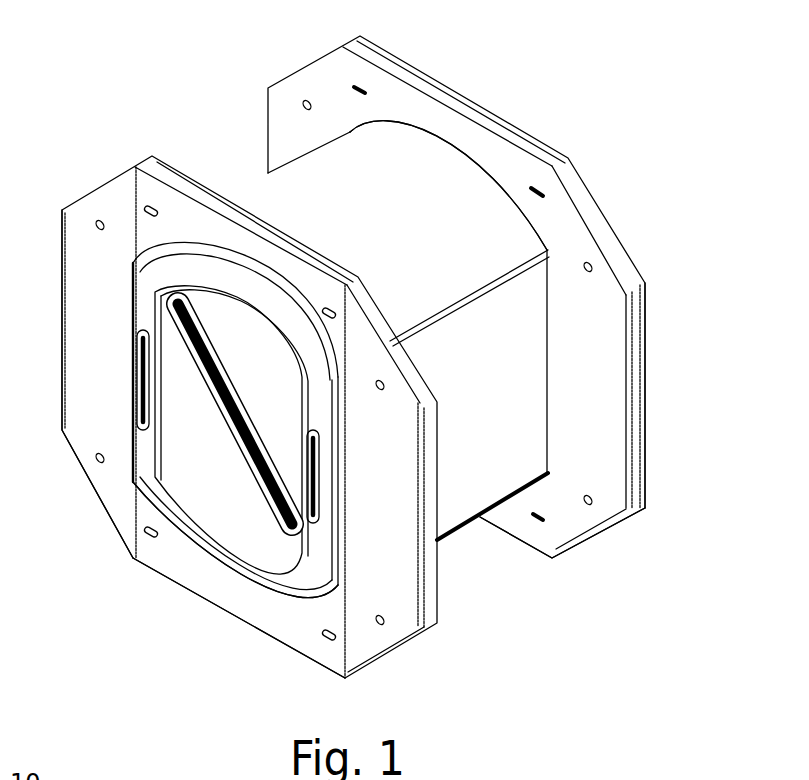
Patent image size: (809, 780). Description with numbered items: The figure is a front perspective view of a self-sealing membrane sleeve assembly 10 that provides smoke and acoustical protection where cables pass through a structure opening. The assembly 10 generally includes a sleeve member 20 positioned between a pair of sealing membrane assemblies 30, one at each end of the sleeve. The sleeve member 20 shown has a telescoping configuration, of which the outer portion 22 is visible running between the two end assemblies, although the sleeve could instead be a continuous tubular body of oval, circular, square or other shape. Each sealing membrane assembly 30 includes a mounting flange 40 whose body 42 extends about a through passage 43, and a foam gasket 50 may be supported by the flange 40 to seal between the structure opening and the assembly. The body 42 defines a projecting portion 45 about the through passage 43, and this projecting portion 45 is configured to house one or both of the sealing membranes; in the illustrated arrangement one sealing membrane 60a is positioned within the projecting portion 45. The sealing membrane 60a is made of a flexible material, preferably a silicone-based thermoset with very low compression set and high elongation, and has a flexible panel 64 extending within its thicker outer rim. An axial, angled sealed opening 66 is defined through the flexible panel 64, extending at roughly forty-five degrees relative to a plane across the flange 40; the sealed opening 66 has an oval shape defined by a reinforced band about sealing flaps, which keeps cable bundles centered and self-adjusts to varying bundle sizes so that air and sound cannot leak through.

The self-sealing membrane sleeve assembly 10 is at (347, 342).
The sleeve member 20 is at (374, 328).
The outer portion 22 is at (258, 188).
The sealing membrane assembly 30 is at (293, 50).
The mounting flange 40 is at (77, 288).
The body 42 is at (167, 565).
The through passage 43 is at (204, 540).
The projecting portion 45 is at (137, 432).
The foam gasket 50 is at (572, 525).
The sealing membrane 60a is at (169, 459).
The flexible panel 64 is at (200, 500).
The sealed opening 66 is at (257, 493).